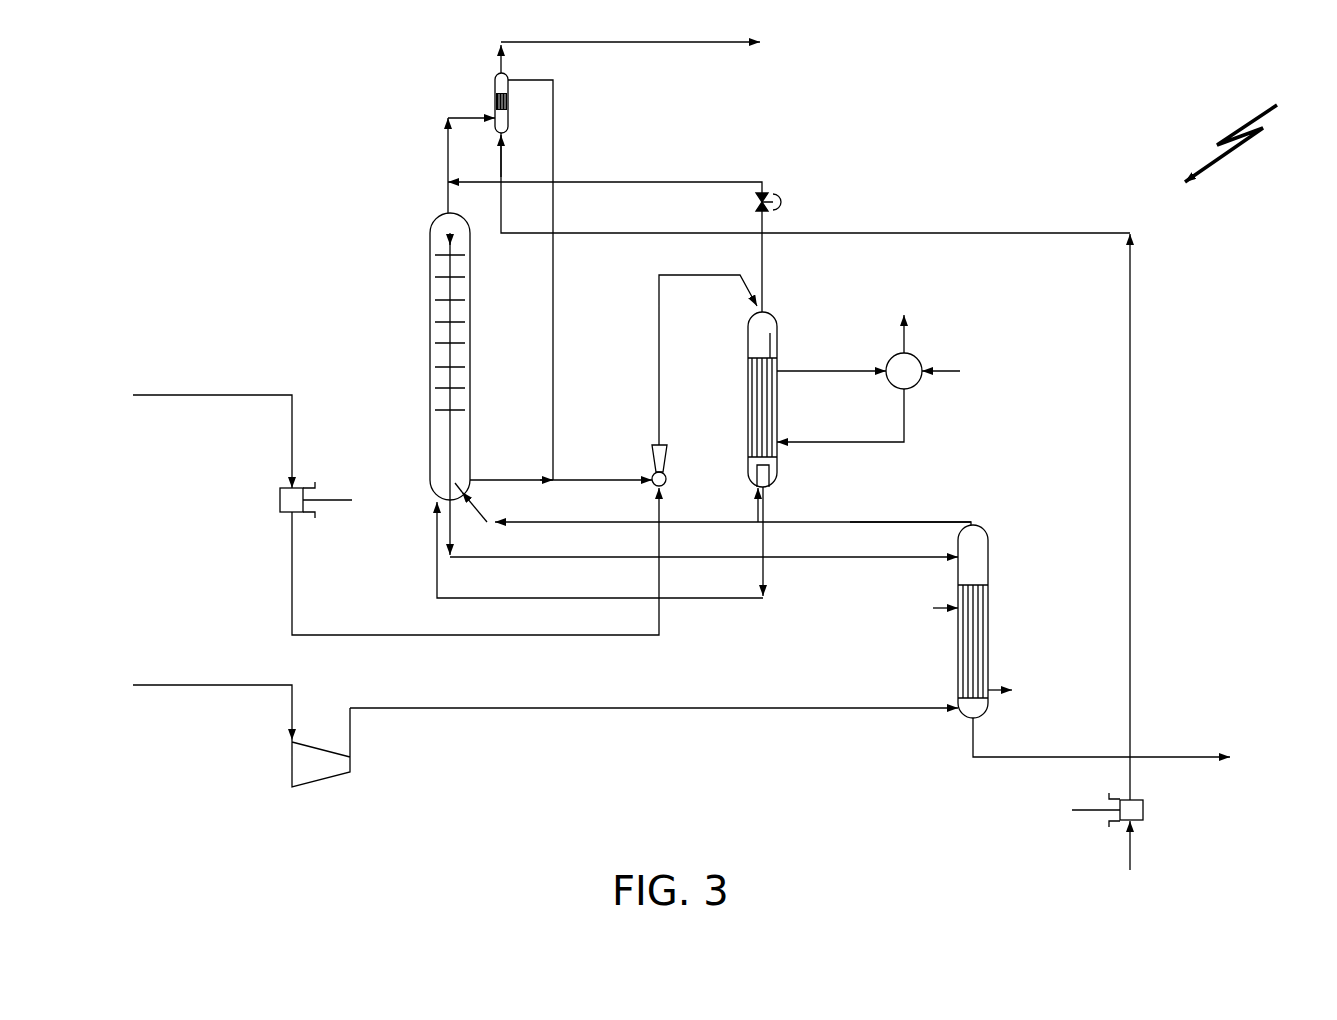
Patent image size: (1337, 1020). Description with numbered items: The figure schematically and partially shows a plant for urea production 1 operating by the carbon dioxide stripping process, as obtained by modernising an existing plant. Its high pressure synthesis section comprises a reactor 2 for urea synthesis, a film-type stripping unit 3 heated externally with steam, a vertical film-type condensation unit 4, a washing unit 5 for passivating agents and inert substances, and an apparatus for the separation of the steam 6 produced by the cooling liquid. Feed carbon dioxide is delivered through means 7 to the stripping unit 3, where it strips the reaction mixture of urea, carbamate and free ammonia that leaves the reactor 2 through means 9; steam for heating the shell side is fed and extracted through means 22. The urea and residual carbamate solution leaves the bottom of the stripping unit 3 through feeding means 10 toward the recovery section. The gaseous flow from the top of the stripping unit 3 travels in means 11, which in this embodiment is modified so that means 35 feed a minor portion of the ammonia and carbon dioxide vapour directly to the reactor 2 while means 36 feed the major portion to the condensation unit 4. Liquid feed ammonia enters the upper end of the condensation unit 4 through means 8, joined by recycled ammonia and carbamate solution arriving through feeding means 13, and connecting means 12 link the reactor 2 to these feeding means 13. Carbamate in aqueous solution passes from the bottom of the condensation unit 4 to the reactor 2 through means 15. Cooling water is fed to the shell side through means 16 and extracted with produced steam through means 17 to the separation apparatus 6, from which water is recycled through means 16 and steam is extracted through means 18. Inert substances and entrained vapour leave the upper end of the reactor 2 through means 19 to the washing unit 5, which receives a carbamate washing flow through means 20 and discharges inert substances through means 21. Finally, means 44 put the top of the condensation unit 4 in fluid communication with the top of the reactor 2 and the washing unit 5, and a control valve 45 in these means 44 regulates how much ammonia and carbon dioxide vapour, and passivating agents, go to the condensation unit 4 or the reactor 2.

The plant for urea production 1 is at (1247, 133).
The reactor 2 is at (428, 290).
The stripping unit 3 is at (990, 565).
The condensation unit 4 is at (747, 350).
The washing unit 5 is at (495, 82).
The apparatus for the separation of the steam 6 is at (913, 338).
The means for feeding feed carbon dioxide 7 is at (187, 687).
The means for feeding feed ammonia 8 is at (187, 397).
The means for feeding reaction mixture 9 is at (850, 559).
The feeding means to urea recovery section 10 is at (1005, 759).
The feeding means for the stripping gas 11 is at (850, 520).
The connecting means 12 is at (510, 478).
The feeding means for recycled ammonia and carbamate 13 is at (555, 205).
The feeding means for carbamate solution 15 is at (736, 600).
The means for feeding water 16 is at (954, 372).
The means for extracting water 17 is at (860, 372).
The means for extracting steam 18 is at (902, 338).
The means for feeding inert substances 19 is at (447, 160).
The means for feeding washing flow 20 is at (1133, 497).
The means for extracting inert substances 21 is at (710, 45).
The means for feeding and extracting steam 22 is at (935, 608).
The means for feeding minor portion to reactor 35 is at (672, 523).
The means for feeding major portion to condensation unit 36 is at (757, 510).
The means for fluid communication 44 is at (658, 180).
The control valve 45 is at (756, 202).